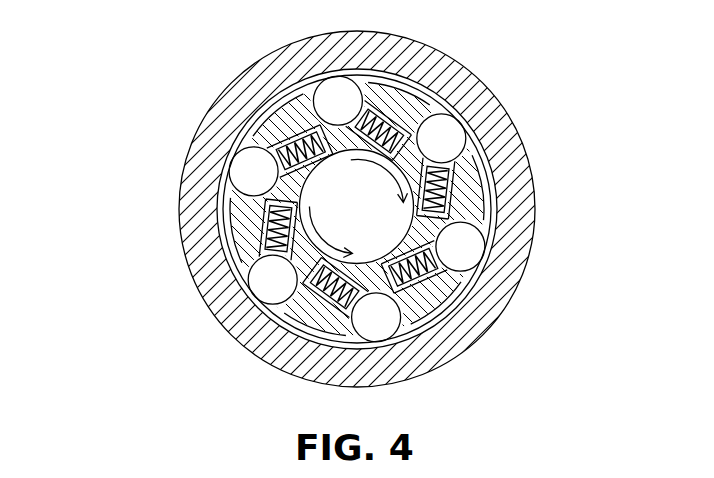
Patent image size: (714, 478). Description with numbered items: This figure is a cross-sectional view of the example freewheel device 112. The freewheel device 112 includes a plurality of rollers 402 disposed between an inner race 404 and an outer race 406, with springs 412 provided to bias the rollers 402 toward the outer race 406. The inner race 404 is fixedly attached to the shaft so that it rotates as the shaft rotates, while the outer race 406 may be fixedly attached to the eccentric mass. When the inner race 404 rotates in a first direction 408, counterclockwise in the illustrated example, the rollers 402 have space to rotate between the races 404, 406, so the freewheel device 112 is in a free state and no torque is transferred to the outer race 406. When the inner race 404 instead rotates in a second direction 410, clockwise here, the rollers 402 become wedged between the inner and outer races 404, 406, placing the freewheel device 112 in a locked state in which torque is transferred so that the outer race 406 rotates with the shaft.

The freewheel device 112 is at (161, 43).
The rollers 402 is at (253, 276).
The inner race 404 is at (450, 182).
The outer race 406 is at (443, 366).
The first direction 408 is at (287, 268).
The second direction 410 is at (436, 110).
The springs 412 is at (295, 128).